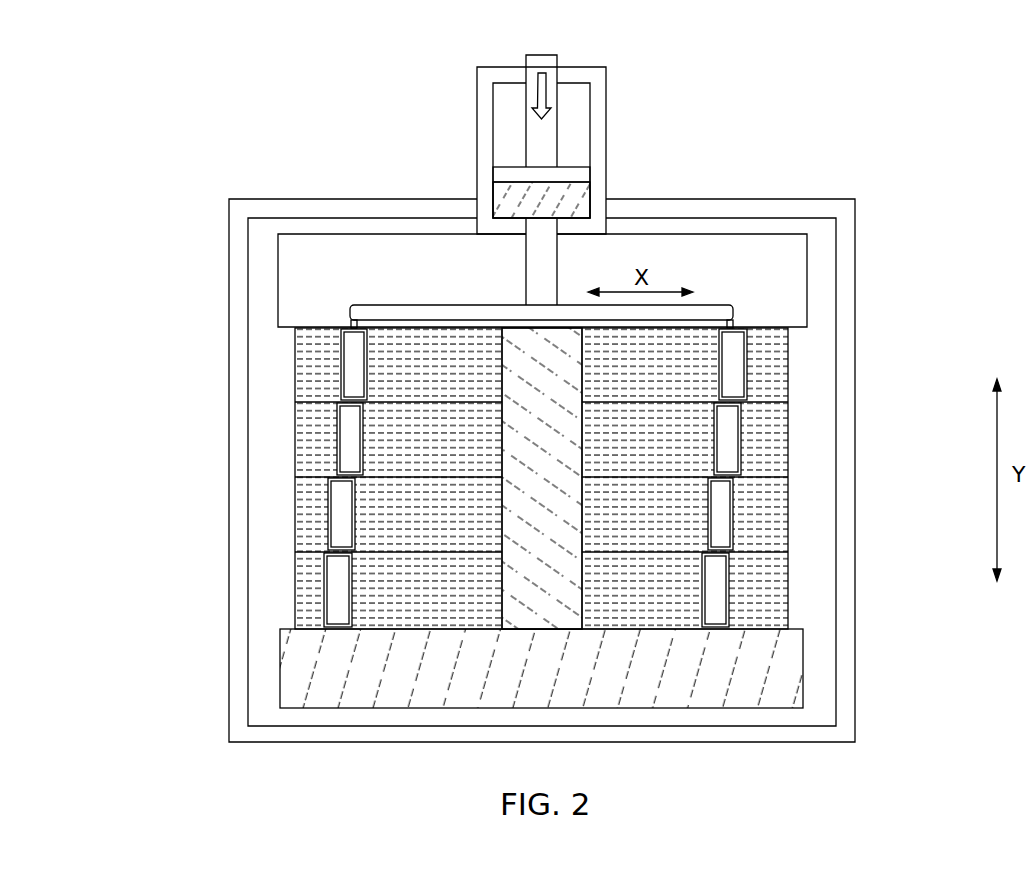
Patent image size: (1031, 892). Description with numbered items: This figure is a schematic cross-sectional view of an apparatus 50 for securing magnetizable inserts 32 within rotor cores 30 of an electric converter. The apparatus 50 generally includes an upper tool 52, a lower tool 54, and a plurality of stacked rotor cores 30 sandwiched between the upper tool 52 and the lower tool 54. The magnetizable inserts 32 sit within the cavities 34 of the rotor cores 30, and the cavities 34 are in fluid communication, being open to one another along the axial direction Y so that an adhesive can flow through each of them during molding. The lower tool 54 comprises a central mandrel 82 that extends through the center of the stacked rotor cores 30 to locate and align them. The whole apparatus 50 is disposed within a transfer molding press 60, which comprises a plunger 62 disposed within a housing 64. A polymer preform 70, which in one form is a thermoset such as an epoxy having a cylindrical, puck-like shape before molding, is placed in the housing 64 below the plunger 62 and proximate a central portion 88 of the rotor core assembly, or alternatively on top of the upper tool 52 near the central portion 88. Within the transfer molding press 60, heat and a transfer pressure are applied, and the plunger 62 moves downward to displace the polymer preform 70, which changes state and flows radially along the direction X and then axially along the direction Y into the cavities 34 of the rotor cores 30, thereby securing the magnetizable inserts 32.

The rotor core 30 is at (300, 363).
The magnetizable insert 32 is at (732, 376).
The cavity 34 is at (762, 341).
The apparatus 50 is at (487, 228).
The upper tool 52 is at (292, 283).
The lower tool 54 is at (288, 668).
The transfer molding press 60 is at (768, 208).
The plunger 62 is at (542, 134).
The housing 64 is at (486, 93).
The polymer preform 70 is at (502, 187).
The central mandrel 82 is at (556, 478).
The central portion 88 is at (508, 303).